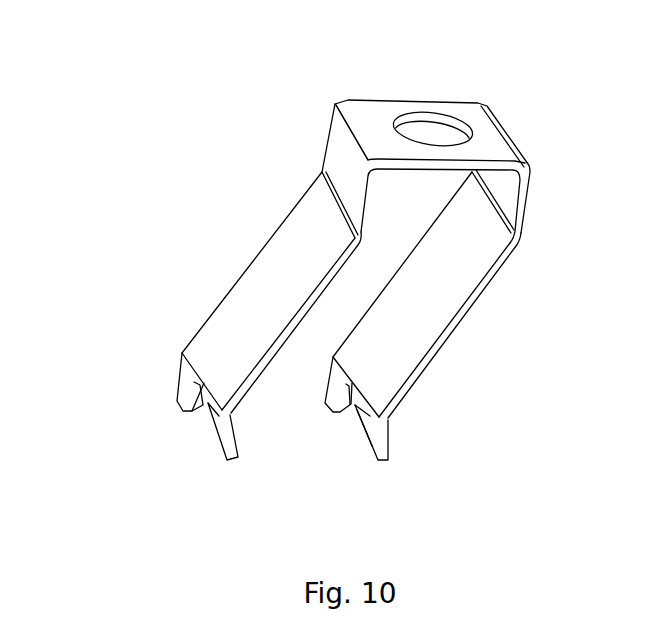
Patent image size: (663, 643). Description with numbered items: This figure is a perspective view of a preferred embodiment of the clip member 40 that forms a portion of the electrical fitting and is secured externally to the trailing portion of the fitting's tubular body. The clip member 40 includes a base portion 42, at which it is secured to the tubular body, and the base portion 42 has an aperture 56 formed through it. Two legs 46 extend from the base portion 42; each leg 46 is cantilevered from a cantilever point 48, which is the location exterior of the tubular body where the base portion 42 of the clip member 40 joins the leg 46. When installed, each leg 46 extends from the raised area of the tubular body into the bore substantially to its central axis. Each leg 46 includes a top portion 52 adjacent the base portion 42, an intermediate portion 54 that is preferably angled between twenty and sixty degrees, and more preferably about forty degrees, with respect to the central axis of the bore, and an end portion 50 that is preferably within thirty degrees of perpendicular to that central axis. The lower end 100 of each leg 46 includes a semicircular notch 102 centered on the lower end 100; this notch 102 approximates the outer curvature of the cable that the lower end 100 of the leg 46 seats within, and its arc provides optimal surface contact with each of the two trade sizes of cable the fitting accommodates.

The clip member 40 is at (163, 205).
The base portion 42 is at (486, 148).
The leg 46 is at (240, 278).
The cantilever point 48 is at (333, 100).
The end portion 50 is at (178, 377).
The top portion 52 is at (338, 160).
The intermediate portion 54 is at (287, 230).
The aperture 56 is at (432, 131).
The lower end 100 is at (385, 462).
The semicircular notch 102 is at (363, 428).